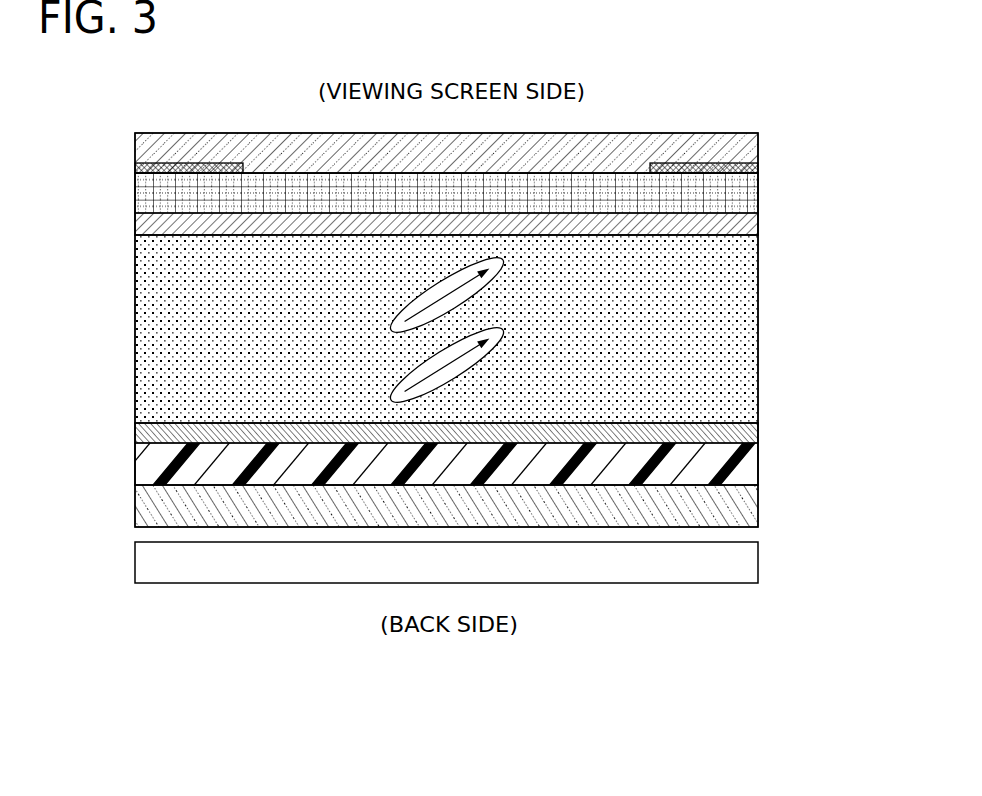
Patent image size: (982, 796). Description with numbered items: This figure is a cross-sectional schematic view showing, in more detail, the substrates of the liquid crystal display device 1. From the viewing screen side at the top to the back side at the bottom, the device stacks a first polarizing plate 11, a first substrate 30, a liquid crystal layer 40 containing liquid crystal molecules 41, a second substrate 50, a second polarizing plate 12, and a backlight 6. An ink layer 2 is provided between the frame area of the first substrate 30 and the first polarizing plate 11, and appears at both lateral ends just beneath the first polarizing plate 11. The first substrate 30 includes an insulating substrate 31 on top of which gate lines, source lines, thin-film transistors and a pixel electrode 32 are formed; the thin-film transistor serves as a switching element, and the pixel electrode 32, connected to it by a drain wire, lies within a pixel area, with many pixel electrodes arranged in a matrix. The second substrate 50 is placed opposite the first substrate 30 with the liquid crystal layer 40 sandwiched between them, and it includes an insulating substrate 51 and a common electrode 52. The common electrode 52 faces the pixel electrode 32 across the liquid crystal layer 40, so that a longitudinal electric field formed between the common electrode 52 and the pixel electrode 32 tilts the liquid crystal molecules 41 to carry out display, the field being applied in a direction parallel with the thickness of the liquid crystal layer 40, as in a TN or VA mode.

The liquid crystal display device 1 is at (778, 111).
The ink layer 2 is at (192, 163).
The backlight 6 is at (735, 567).
The first polarizing plate 11 is at (738, 152).
The second polarizing plate 12 is at (740, 511).
The first substrate 30 is at (842, 173).
The insulating substrate 31 is at (740, 193).
The pixel electrode 32 is at (740, 225).
The liquid crystal layer 40 is at (735, 290).
The liquid crystal molecules 41 is at (465, 362).
The second substrate 50 is at (842, 420).
The insulating substrate 51 is at (740, 471).
The common electrode 52 is at (740, 432).